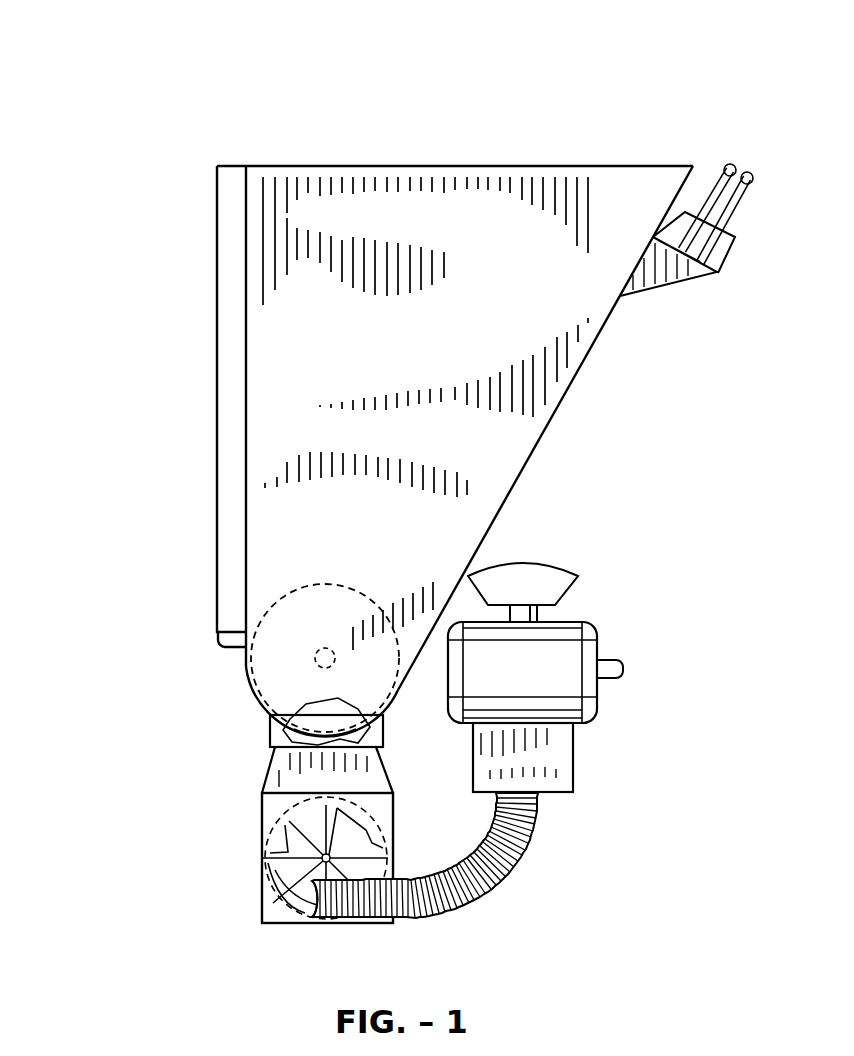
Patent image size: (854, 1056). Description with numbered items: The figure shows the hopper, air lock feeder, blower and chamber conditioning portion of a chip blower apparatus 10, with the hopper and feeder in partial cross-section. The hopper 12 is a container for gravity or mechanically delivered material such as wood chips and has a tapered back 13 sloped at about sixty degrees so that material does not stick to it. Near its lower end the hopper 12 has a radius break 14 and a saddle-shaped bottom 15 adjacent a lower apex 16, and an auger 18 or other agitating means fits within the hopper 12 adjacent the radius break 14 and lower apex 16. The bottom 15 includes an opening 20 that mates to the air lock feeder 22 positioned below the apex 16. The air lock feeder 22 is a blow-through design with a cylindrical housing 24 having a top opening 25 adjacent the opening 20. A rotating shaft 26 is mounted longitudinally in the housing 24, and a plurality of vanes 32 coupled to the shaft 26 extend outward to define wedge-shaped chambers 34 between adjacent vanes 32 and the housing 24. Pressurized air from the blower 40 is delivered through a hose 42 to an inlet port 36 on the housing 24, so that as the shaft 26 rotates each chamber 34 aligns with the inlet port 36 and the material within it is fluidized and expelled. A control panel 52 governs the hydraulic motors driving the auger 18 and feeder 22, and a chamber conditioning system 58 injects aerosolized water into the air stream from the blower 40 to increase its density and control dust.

The chip blower apparatus 10 is at (139, 68).
The hopper 12 is at (508, 190).
The tapered back 13 is at (562, 404).
The radius break 14 is at (254, 688).
The saddle-shaped bottom 15 is at (352, 728).
The lower apex 16 is at (271, 744).
The auger 18 is at (333, 586).
The opening 20 is at (295, 775).
The air lock feeder 22 is at (244, 942).
The housing 24 is at (264, 908).
The top opening 25 is at (284, 738).
The rotating shaft 26 is at (271, 853).
The vanes 32 is at (276, 880).
The chambers 34 is at (358, 845).
The inlet port 36 is at (316, 914).
The blower 40 is at (590, 702).
The hose 42 is at (460, 885).
The control panel 52 is at (720, 245).
The chamber conditioning system 58 is at (562, 743).